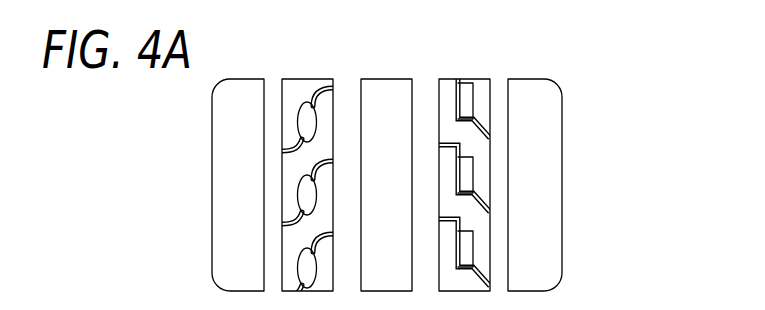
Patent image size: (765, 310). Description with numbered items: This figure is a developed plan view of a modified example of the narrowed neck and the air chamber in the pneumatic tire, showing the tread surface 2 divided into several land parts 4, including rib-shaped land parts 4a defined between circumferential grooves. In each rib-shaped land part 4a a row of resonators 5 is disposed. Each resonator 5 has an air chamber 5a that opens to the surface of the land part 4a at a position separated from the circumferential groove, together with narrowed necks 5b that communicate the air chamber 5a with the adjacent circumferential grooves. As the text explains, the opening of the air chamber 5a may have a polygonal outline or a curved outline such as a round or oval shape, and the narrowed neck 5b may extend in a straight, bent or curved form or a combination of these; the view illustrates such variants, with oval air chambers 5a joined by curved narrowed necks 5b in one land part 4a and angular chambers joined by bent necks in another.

The tread surface 2 is at (393, 169).
The land part 4 is at (393, 169).
The rib-shaped land part 4a is at (393, 169).
The resonator 5 is at (393, 184).
The air chamber 5a is at (306, 122).
The narrowed neck 5b is at (309, 97).